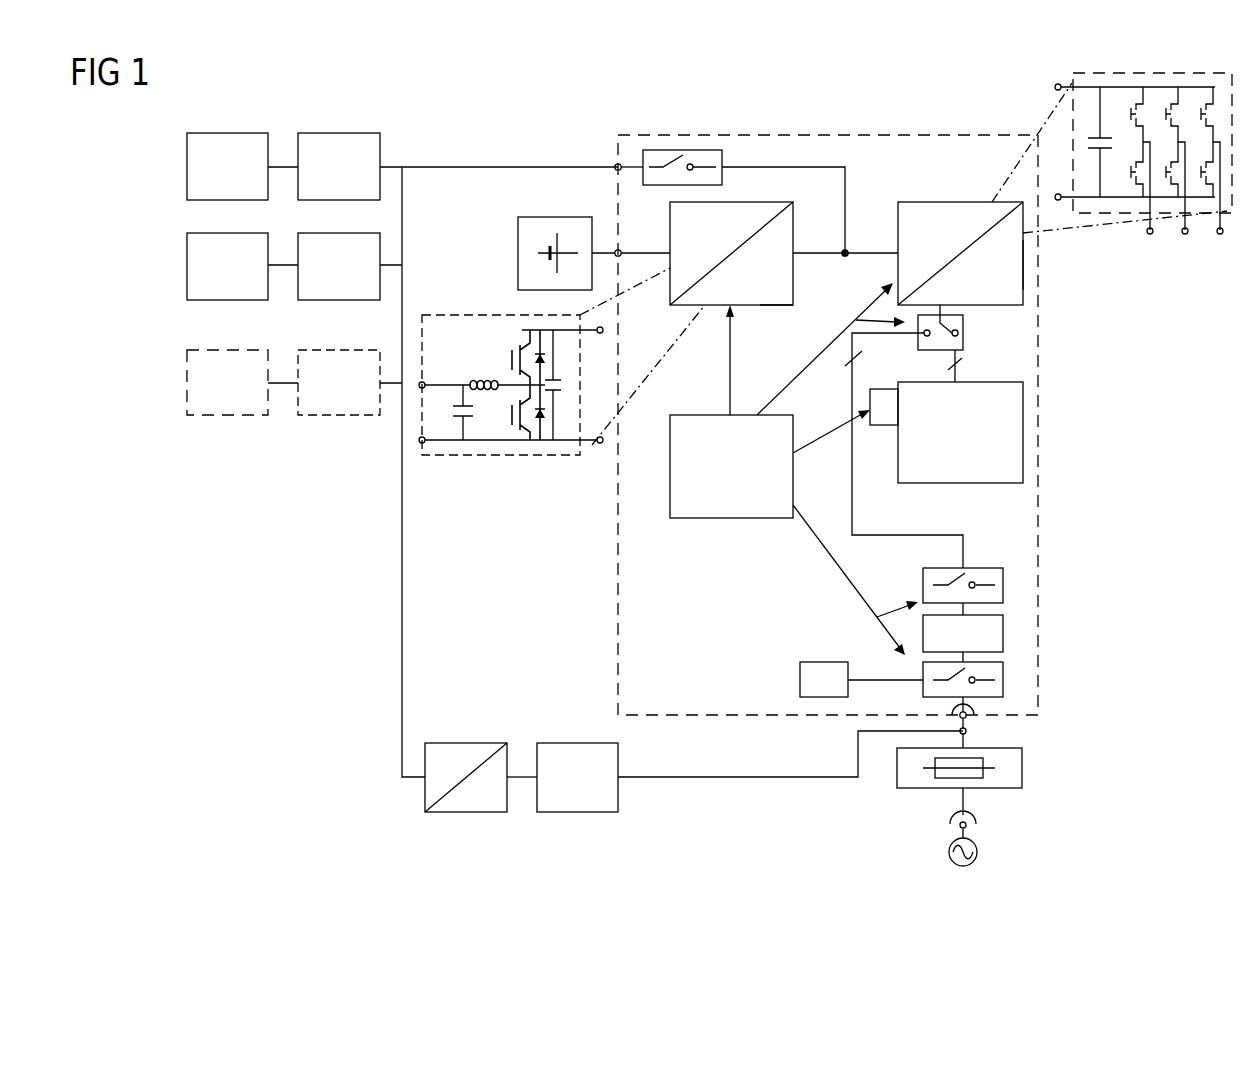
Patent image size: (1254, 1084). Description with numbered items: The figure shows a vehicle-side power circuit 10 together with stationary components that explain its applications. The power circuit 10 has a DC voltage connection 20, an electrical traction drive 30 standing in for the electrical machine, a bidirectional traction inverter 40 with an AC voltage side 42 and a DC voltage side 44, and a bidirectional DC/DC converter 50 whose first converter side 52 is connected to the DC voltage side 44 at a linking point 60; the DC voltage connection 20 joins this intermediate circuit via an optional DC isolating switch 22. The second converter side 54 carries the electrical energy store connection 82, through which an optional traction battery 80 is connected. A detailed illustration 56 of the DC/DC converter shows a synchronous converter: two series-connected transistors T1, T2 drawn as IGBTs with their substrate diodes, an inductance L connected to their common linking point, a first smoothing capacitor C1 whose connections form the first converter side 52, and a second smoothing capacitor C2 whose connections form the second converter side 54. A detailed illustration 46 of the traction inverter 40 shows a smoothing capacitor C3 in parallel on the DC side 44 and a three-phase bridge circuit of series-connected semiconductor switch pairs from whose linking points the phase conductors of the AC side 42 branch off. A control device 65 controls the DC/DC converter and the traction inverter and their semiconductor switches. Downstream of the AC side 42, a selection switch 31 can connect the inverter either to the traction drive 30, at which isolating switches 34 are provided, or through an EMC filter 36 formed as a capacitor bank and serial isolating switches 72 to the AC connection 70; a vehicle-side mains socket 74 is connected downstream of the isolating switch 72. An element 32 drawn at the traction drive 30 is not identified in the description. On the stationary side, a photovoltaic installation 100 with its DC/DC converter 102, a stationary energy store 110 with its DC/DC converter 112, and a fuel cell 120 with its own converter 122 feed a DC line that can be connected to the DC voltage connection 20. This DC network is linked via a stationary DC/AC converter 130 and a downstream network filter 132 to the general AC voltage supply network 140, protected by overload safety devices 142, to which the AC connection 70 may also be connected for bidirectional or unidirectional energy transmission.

The power circuit 10 is at (618, 622).
The DC voltage connection 20 is at (619, 164).
The DC isolating switch 22 is at (683, 150).
The electrical traction drive 30 is at (1023, 430).
The selection switch 31 is at (963, 333).
The sensor 32 is at (883, 425).
The isolating switches 34 is at (1003, 585).
The EMC filter 36 is at (1003, 633).
The traction inverter 40 is at (915, 196).
The AC voltage side 42 is at (1023, 266).
The DC voltage side 44 is at (1093, 151).
The detailed illustration of the traction inverter 46 is at (1203, 258).
The DC/DC converter 50 is at (785, 190).
The first converter side 52 is at (780, 305).
The second converter side 54 is at (745, 202).
The detailed illustration of the DC/DC converter 56 is at (443, 458).
The linking point 60 is at (845, 250).
The control device 65 is at (735, 518).
The AC voltage connection 70 is at (974, 714).
The isolating switches 72 is at (1003, 680).
The vehicle-side mains socket 74 is at (800, 680).
The traction battery 80 is at (535, 217).
The electrical energy store connection 82 is at (618, 249).
The photovoltaic installation 100 is at (228, 133).
The DC/DC converter 102 is at (340, 133).
The stationary energy store 110 is at (187, 265).
The DC/DC converter 112 is at (335, 300).
The fuel cell 120 is at (228, 415).
The converter 122 is at (341, 415).
The stationary DC/AC converter 130 is at (468, 743).
The network filter 132 is at (578, 743).
The AC voltage supply network 140 is at (978, 852).
The overload safety devices 142 is at (1022, 768).
The inductance L is at (469, 382).
The transistor T1 is at (511, 338).
The transistor T2 is at (520, 442).
The first smoothing capacitor C1 is at (568, 440).
The second smoothing capacitor C2 is at (465, 442).
The smoothing capacitor C3 is at (1096, 137).